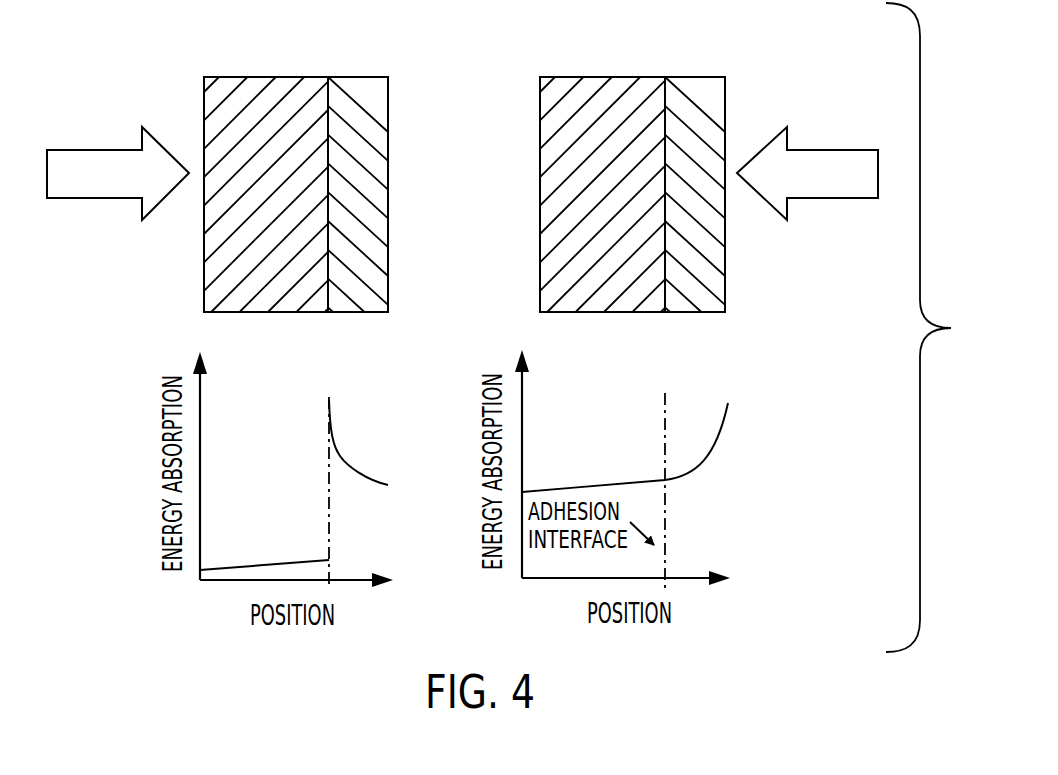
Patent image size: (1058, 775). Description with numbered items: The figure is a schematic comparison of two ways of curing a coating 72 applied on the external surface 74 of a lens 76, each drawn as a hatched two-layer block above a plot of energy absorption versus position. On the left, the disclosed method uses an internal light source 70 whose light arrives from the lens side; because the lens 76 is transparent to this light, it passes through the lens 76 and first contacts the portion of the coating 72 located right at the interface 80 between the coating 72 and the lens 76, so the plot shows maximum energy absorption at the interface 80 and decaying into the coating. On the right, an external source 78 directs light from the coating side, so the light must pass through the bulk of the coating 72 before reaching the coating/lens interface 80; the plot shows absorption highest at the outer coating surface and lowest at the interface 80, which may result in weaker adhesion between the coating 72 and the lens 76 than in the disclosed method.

The internal light source 70 is at (95, 149).
The coating 72 is at (384, 98).
The external surface 74 is at (332, 90).
The lens 76 is at (273, 83).
The external source 78 is at (838, 149).
The interface 80 is at (329, 500).